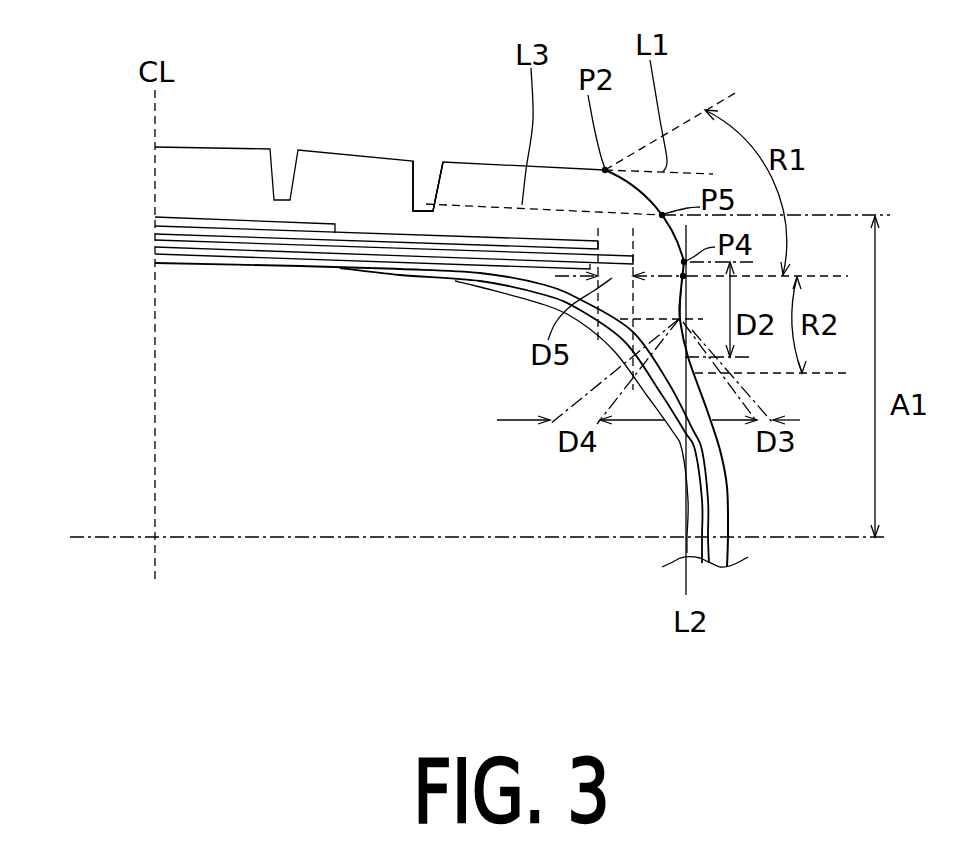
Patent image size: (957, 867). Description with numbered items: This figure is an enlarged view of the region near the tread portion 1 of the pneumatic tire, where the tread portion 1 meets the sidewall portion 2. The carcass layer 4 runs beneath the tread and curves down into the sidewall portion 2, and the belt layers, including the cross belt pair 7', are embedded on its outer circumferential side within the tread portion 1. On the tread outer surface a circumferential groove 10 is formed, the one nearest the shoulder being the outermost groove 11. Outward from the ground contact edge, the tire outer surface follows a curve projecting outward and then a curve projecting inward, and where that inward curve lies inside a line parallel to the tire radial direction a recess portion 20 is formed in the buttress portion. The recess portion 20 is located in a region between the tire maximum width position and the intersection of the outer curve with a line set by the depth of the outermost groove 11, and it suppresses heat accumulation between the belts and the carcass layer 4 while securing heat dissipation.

The tread portion 1 is at (187, 128).
The sidewall portion 2 is at (748, 548).
The carcass layer 4 is at (443, 269).
The cross belt pair 7' is at (394, 292).
The circumferential groove 10 is at (428, 182).
The outermost groove 11 is at (428, 186).
The recess portion 20 is at (680, 300).